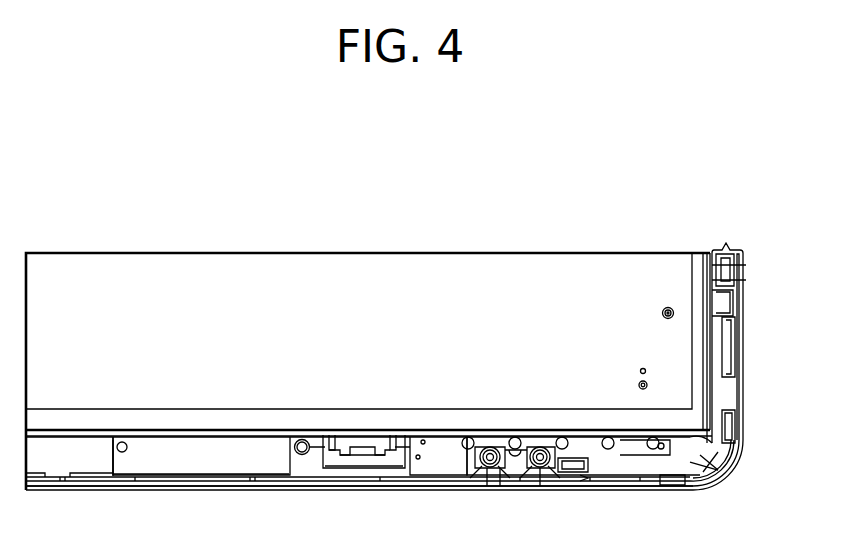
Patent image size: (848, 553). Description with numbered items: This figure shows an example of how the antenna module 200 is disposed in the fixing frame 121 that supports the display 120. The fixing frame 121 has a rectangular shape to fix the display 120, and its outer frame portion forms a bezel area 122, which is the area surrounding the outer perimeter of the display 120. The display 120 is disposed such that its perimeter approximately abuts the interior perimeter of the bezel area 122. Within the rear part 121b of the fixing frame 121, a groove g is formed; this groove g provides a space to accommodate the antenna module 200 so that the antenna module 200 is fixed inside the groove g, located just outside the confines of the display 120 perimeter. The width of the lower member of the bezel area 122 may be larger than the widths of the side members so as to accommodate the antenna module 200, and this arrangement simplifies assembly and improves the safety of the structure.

The display 120 is at (666, 266).
The fixing frame 121 is at (743, 323).
The bezel area 122 is at (726, 250).
The rear part 121b is at (727, 400).
The antenna module 200 is at (255, 455).
The groove g is at (113, 463).